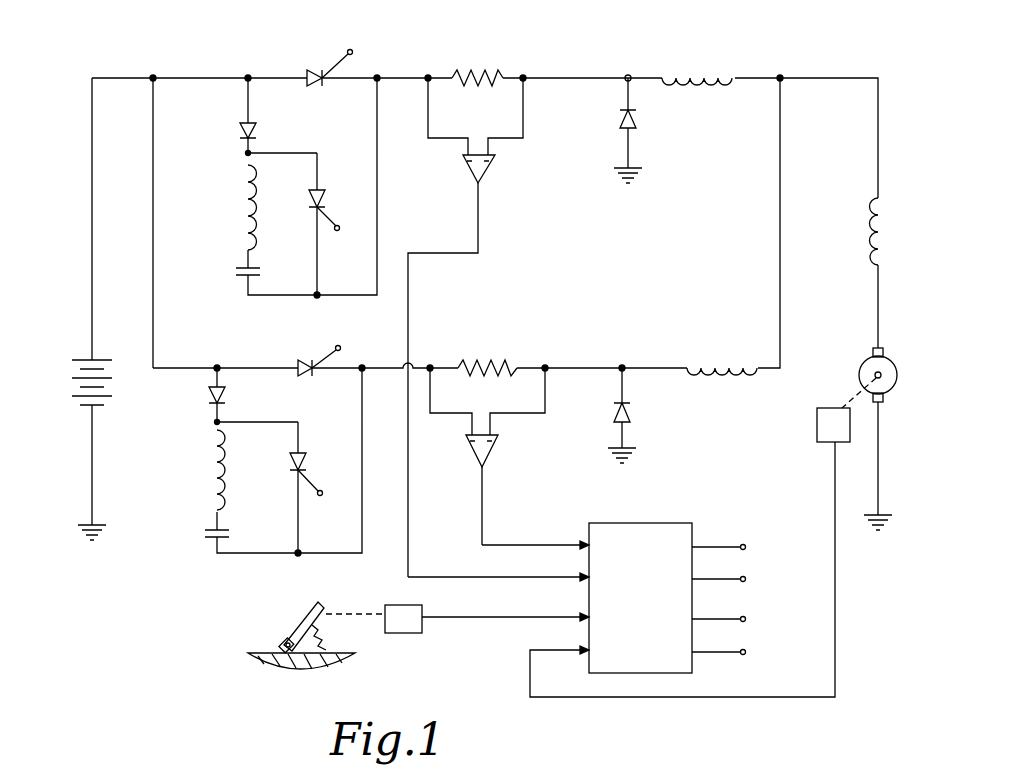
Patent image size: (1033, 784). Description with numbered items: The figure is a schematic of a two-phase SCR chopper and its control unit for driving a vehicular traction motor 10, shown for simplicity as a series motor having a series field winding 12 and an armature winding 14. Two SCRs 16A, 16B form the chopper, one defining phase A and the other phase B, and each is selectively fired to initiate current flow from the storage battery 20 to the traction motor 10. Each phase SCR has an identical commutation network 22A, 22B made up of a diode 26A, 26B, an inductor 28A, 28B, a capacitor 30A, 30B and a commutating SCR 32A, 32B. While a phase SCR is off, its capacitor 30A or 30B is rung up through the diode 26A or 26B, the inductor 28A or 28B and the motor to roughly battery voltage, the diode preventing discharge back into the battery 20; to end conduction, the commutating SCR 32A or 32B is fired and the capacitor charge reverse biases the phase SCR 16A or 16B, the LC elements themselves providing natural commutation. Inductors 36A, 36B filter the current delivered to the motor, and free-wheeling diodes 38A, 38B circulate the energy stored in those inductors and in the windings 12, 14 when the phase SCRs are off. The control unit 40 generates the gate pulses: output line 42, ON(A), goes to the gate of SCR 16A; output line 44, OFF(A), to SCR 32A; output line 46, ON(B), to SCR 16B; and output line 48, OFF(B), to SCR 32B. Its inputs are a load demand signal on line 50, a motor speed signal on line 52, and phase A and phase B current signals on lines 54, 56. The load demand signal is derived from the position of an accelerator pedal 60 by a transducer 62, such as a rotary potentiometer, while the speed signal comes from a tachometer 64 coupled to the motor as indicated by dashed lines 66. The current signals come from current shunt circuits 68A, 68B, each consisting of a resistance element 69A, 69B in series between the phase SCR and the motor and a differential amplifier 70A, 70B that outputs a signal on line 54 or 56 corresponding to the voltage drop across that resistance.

The traction motor 10 is at (912, 320).
The series field winding 12 is at (868, 240).
The armature winding 14 is at (866, 358).
The SCR 16A is at (313, 68).
The SCR 16B is at (308, 358).
The storage battery 20 is at (80, 360).
The commutation network 22A is at (272, 202).
The commutation network 22B is at (242, 478).
The diode 26A is at (240, 126).
The diode 26B is at (209, 402).
The inductor 28A is at (240, 205).
The inductor 28B is at (207, 470).
The capacitor 30A is at (242, 285).
The capacitor 30B is at (205, 527).
The SCR 32A is at (322, 186).
The SCR 32B is at (305, 452).
The inductor 36A is at (712, 68).
The inductor 36B is at (724, 358).
The free-wheeling diode 38A is at (638, 122).
The free-wheeling diode 38B is at (632, 418).
The control unit 40 is at (654, 523).
The output line 42 is at (712, 546).
The output line 44 is at (720, 579).
The output line 46 is at (722, 620).
The output line 48 is at (704, 655).
The line 50 is at (530, 620).
The line 52 is at (548, 652).
The line 54 is at (530, 576).
The line 56 is at (553, 542).
The accelerator pedal 60 is at (297, 621).
The transducer 62 is at (400, 633).
The tachometer 64 is at (817, 440).
The dashed lines 66 is at (854, 395).
The current shunt circuit 68A is at (489, 307).
The current shunt circuit 68B is at (513, 414).
The resistance element 69A is at (485, 72).
The resistance element 69B is at (466, 362).
The differential amplifier 70A is at (470, 176).
The differential amplifier 70B is at (472, 465).